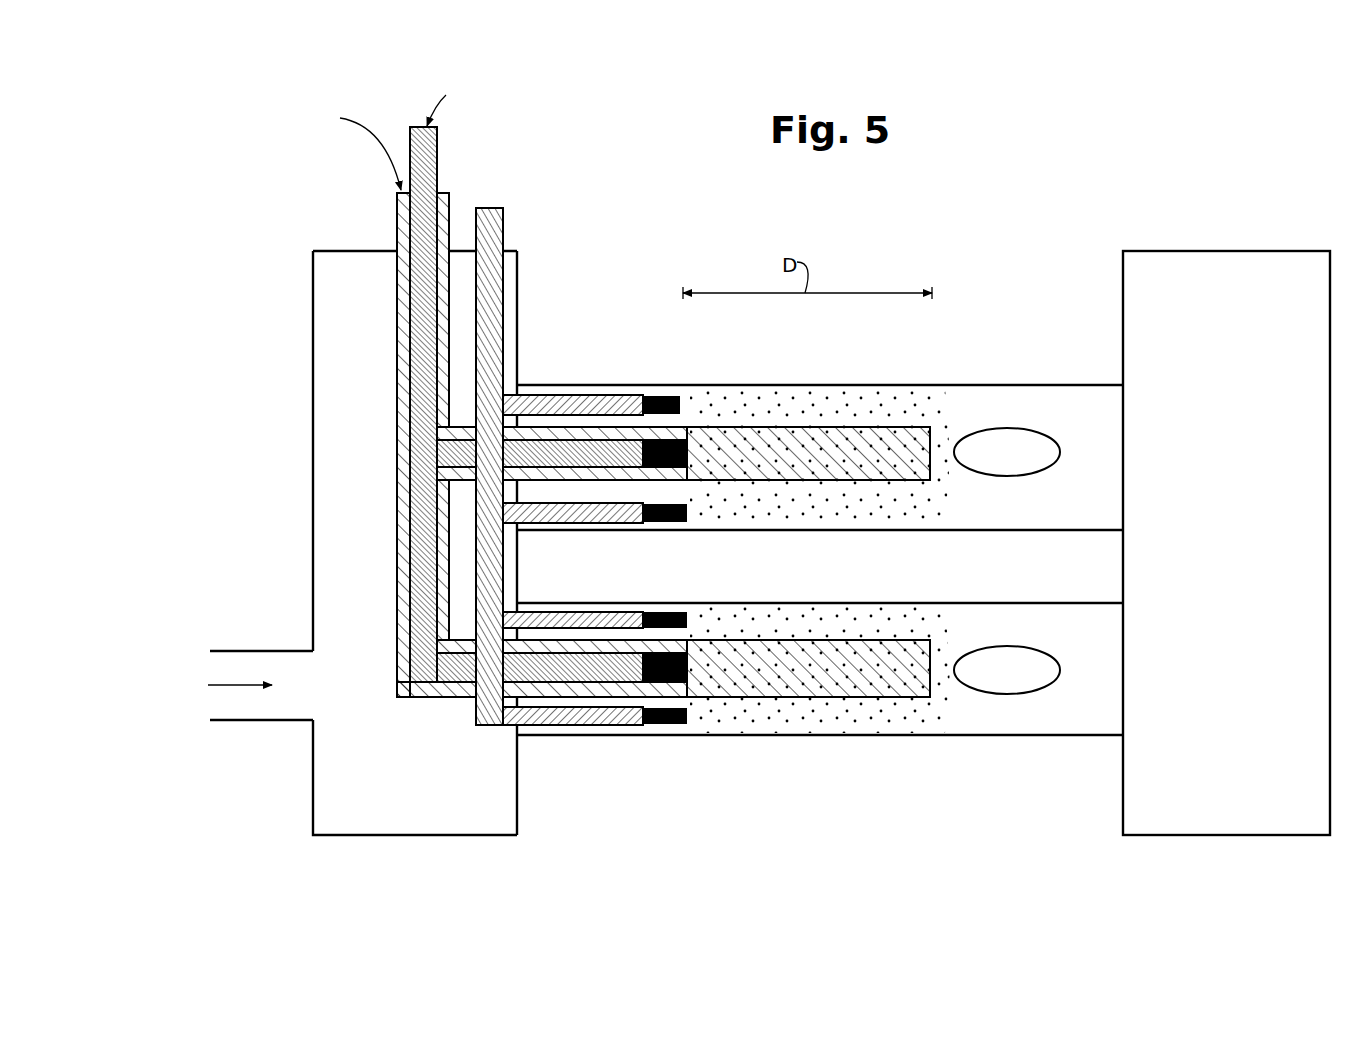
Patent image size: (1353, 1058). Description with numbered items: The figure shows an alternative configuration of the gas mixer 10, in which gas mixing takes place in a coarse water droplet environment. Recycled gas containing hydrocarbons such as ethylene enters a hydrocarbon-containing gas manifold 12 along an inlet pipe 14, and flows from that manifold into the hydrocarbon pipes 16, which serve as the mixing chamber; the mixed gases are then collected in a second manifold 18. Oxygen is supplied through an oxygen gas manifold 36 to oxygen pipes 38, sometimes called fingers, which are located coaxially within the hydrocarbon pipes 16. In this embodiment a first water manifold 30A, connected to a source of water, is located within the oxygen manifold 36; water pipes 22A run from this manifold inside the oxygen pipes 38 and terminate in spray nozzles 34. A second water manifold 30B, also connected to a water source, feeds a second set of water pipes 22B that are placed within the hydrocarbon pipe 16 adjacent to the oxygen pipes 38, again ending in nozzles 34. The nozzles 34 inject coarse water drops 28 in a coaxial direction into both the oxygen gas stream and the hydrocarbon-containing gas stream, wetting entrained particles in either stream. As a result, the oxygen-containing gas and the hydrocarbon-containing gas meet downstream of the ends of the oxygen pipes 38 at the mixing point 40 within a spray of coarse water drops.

The gas mixer 10 is at (914, 243).
The hydrocarbon-containing gas manifold 12 is at (313, 345).
The inlet pipe 14 is at (270, 651).
The hydrocarbon pipes 16 is at (976, 385).
The second manifold 18 is at (1175, 262).
The water pipes 22A is at (585, 412).
The second set of water pipes 22B is at (640, 398).
The coarse water drops 28 is at (788, 403).
The first water manifold 30A is at (437, 145).
The second water manifold 30B is at (493, 208).
The spray nozzles 34 is at (690, 510).
The oxygen gas manifold 36 is at (397, 213).
The oxygen pipes 38 is at (850, 415).
The mixing point 40 is at (1007, 428).